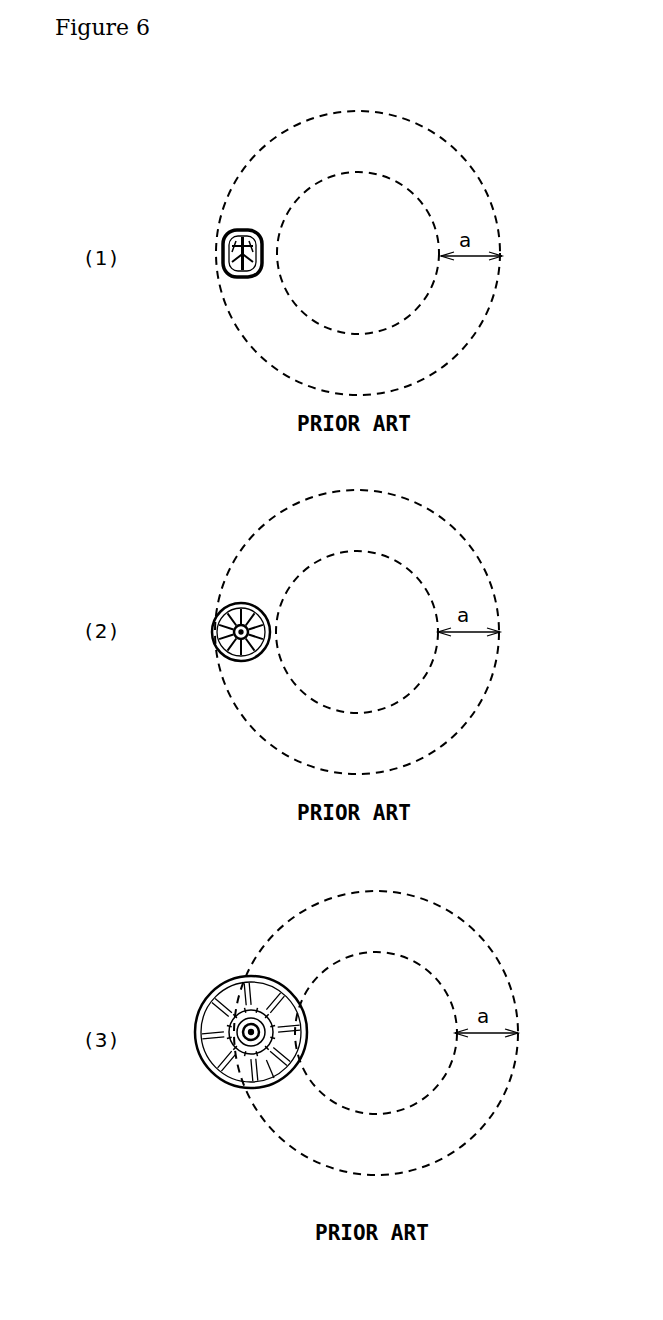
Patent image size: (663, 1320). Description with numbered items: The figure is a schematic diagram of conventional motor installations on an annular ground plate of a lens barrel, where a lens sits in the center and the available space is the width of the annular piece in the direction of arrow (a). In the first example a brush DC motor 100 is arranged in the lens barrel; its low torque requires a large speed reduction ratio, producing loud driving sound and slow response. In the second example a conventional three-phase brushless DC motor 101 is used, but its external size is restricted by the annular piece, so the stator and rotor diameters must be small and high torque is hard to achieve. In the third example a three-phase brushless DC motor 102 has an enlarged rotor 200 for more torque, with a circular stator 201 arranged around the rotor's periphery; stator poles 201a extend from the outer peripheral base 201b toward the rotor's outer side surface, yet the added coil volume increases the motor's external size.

The brush DC motor 100 is at (228, 236).
The three-phase brushless DC motor 101 is at (214, 634).
The three-phase brushless DC motor 102 is at (196, 1022).
The rotor 200 is at (240, 998).
The stator 201 is at (200, 1045).
The stator poles 201a is at (272, 1087).
The outer peripheral base 201b is at (228, 1085).